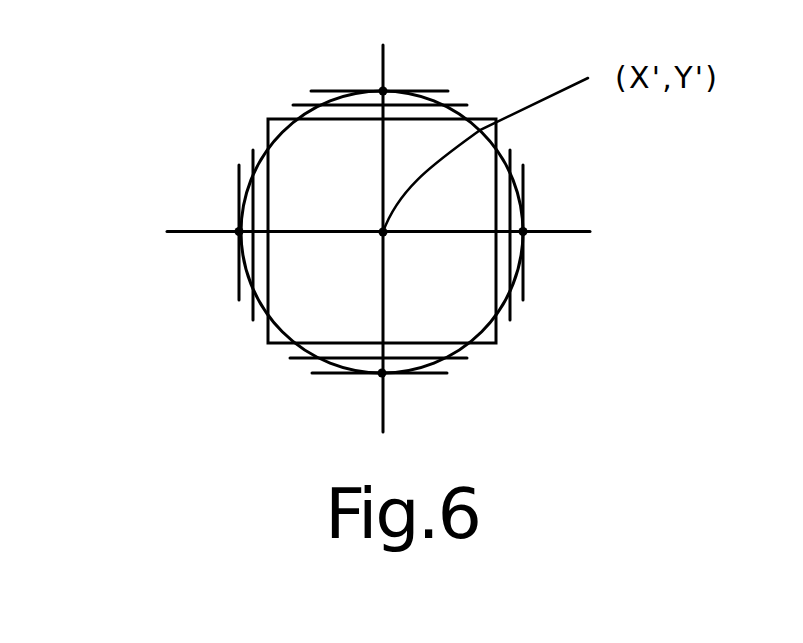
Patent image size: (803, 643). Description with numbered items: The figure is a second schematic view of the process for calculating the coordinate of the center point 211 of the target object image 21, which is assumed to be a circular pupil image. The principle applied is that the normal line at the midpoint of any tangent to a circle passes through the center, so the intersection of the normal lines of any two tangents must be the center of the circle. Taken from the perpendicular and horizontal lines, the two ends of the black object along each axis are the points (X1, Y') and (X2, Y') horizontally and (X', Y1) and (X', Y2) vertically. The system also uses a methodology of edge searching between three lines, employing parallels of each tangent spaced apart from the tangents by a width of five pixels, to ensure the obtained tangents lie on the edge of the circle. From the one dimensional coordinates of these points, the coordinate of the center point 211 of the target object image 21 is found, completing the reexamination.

The target object image 21 is at (302, 163).
The center point 211 is at (383, 232).
The top edge point (X',Y1) Y1 is at (383, 91).
The bottom edge point (X',Y2) Y2 is at (382, 373).
The left edge point (X1,Y') X1 is at (239, 231).
The right edge point (X2,Y') X2 is at (523, 232).